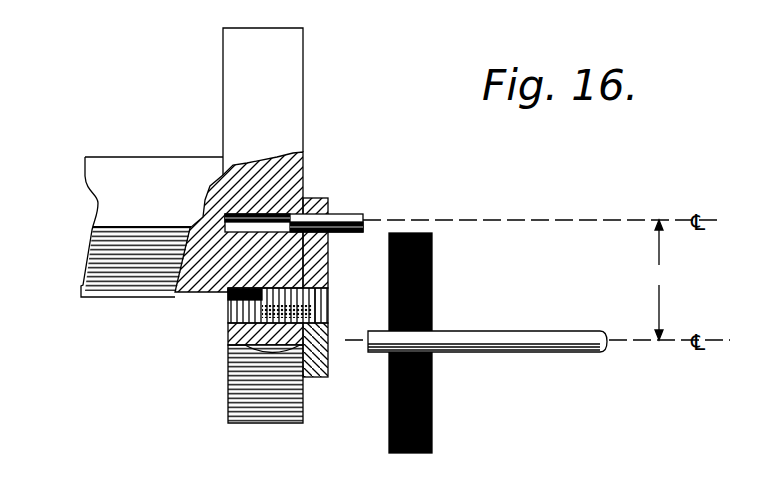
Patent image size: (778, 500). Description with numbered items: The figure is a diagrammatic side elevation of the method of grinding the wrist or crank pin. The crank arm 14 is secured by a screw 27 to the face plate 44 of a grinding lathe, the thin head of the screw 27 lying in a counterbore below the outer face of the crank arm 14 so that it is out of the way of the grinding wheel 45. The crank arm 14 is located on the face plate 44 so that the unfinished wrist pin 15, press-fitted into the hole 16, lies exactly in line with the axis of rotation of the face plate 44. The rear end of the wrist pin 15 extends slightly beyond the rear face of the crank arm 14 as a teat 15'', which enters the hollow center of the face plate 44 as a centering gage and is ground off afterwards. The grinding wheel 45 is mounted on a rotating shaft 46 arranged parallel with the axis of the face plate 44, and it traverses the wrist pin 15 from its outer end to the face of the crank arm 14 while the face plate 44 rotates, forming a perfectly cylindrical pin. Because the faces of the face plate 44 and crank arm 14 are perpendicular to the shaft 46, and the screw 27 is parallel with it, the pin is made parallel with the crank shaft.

The face plate 44 is at (293, 136).
The teat 15'' is at (260, 222).
The hole 16 is at (318, 200).
The wrist pin 15 is at (305, 211).
The screw 27 is at (318, 294).
The crank arm 14 is at (317, 372).
The grinding wheel 45 is at (432, 280).
The rotating shaft 46 is at (541, 336).